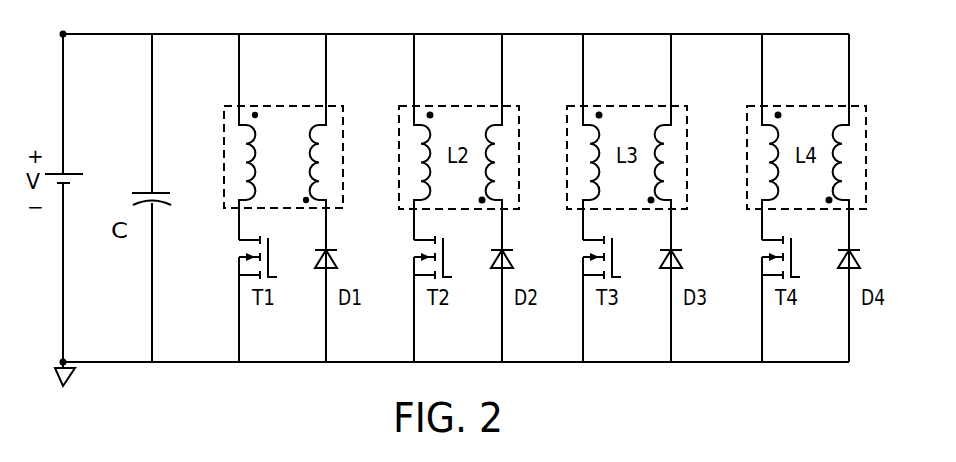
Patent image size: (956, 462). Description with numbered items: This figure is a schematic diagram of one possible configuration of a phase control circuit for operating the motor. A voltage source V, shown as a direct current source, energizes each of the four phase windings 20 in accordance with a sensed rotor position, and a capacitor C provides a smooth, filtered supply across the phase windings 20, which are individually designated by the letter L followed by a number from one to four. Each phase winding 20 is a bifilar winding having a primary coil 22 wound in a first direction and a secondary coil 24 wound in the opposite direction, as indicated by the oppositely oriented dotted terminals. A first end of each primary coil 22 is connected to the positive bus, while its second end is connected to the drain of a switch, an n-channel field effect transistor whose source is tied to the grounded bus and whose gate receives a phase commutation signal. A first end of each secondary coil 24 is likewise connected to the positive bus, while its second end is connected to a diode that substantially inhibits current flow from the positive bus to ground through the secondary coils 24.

The phase winding 20 is at (221, 208).
The primary coil 22 is at (241, 140).
The secondary coil 24 is at (327, 143).